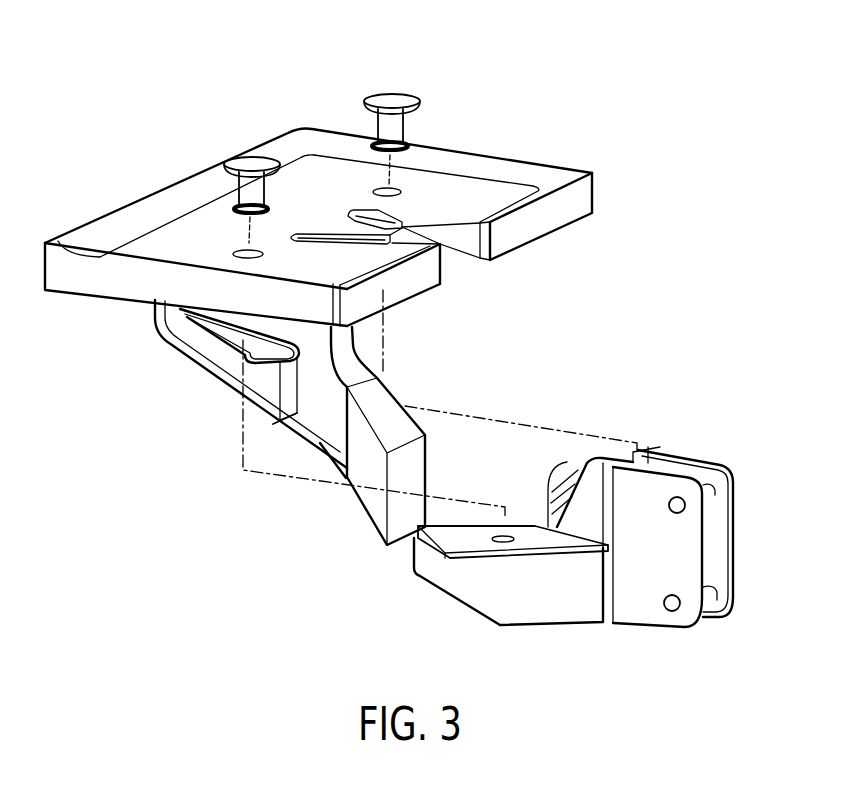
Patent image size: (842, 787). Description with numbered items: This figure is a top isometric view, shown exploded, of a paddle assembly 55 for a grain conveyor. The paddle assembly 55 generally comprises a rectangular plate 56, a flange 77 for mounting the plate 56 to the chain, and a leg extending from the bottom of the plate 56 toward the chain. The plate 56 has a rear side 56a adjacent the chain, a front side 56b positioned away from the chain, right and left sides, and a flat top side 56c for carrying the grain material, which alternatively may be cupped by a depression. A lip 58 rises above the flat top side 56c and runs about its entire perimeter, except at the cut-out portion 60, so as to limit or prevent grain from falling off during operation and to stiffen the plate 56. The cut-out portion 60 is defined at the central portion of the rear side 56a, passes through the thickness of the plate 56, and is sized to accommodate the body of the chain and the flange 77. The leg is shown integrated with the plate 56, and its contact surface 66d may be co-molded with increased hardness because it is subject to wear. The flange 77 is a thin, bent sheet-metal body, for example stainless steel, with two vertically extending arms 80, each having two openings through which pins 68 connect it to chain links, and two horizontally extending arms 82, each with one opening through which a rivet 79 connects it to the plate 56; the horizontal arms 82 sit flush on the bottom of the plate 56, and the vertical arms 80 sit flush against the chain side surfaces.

The paddle assembly 55 is at (525, 173).
The plate 56 is at (88, 295).
The rear side 56a is at (542, 218).
The front side 56b is at (165, 198).
The flat top side 56c is at (437, 215).
The lip 58 is at (310, 140).
The cut-out portion 60 is at (462, 215).
The contact surface 66d is at (405, 507).
The pins 68 is at (679, 601).
The flange 77 is at (603, 468).
The rivets 79 is at (392, 92).
The vertically extending arms 80 is at (640, 607).
The horizontally extending arms 82 is at (450, 527).